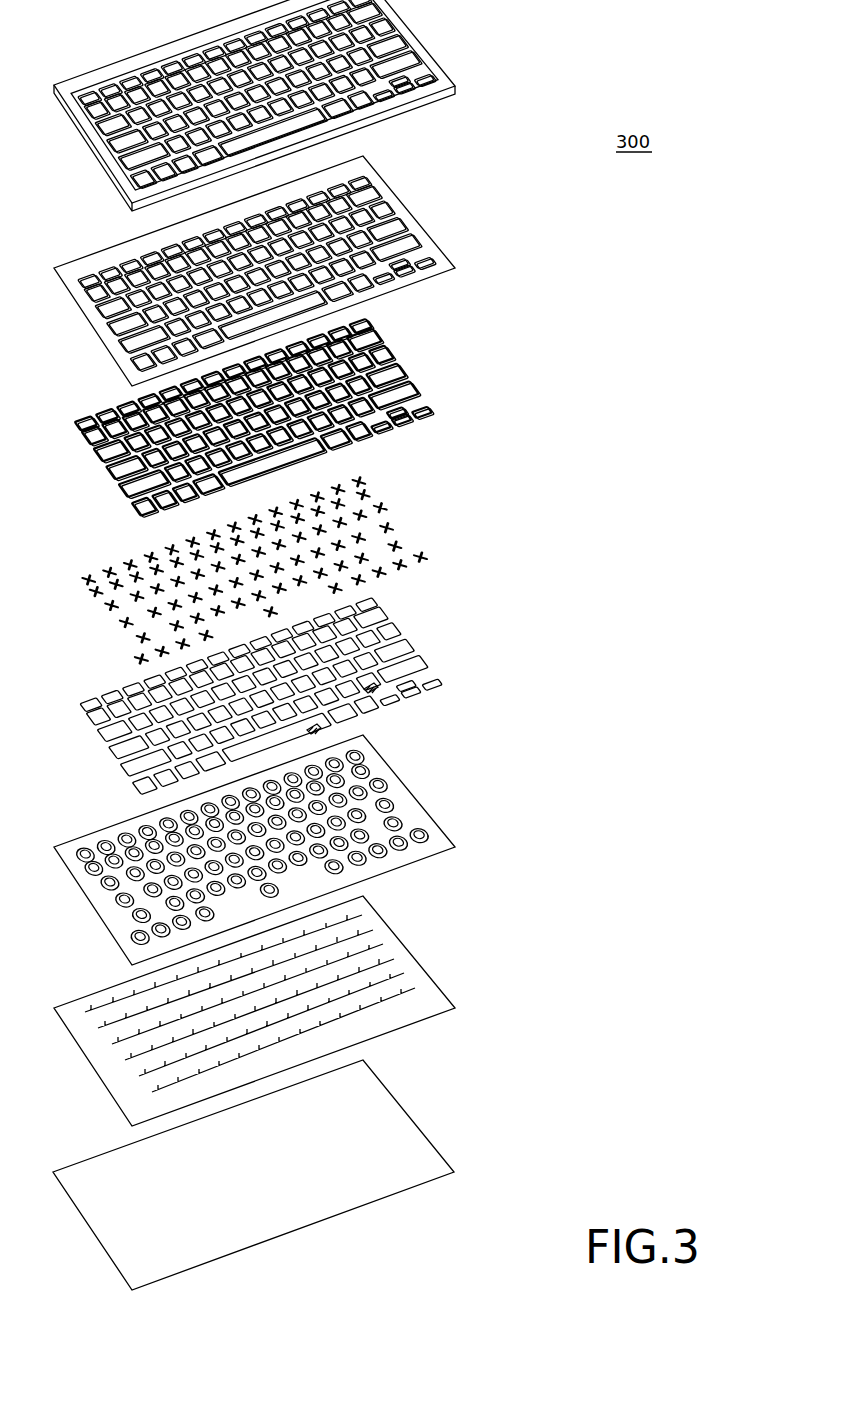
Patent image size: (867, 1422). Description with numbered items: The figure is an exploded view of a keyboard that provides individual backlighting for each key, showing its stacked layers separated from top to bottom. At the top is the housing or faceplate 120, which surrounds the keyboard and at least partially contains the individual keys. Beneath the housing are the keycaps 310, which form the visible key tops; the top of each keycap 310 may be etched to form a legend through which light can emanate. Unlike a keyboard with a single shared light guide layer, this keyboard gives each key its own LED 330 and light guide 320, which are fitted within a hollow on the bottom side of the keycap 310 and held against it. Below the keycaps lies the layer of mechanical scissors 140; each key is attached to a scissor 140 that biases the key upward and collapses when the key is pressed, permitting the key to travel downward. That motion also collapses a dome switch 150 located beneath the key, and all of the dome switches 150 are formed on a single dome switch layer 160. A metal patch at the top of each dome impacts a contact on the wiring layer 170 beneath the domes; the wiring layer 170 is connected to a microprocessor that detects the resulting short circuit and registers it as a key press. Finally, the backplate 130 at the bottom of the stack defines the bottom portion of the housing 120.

The housing 120 is at (420, 40).
The keycap 310 is at (405, 385).
The mechanical scissor 140 is at (380, 508).
The light guide 320 is at (276, 696).
The LED 330 is at (372, 678).
The dome switch layer 160 is at (294, 850).
The dome switch 150 is at (420, 835).
The wiring layer 170 is at (435, 990).
The backplate 130 is at (390, 1090).